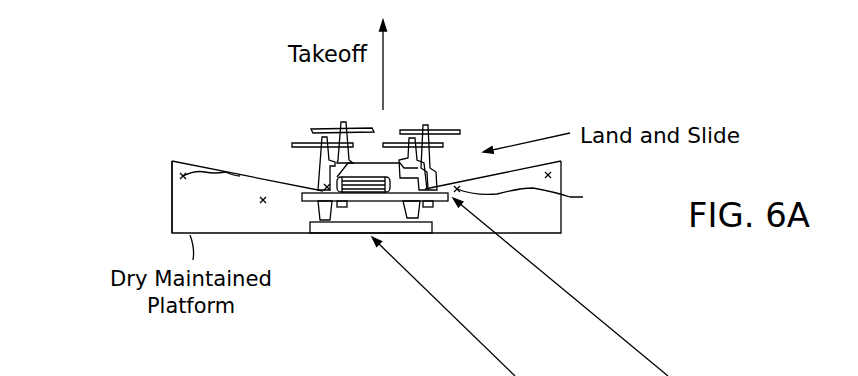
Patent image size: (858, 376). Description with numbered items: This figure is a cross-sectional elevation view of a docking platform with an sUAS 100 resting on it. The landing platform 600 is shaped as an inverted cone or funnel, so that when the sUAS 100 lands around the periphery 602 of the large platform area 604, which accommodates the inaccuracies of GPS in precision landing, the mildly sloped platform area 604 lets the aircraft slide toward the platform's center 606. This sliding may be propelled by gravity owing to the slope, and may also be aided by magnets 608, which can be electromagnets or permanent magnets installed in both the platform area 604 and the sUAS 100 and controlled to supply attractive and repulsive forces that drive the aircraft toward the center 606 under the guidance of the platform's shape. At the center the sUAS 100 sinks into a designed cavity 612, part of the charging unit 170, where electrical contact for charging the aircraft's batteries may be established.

The sUAS 100 is at (433, 125).
The charging unit 170 is at (342, 305).
The landing platform 600 is at (116, 159).
The periphery 602 is at (172, 161).
The platform area 604 is at (227, 163).
The center 606 is at (315, 233).
The magnets 608 is at (327, 187).
The cavity 612 is at (352, 212).